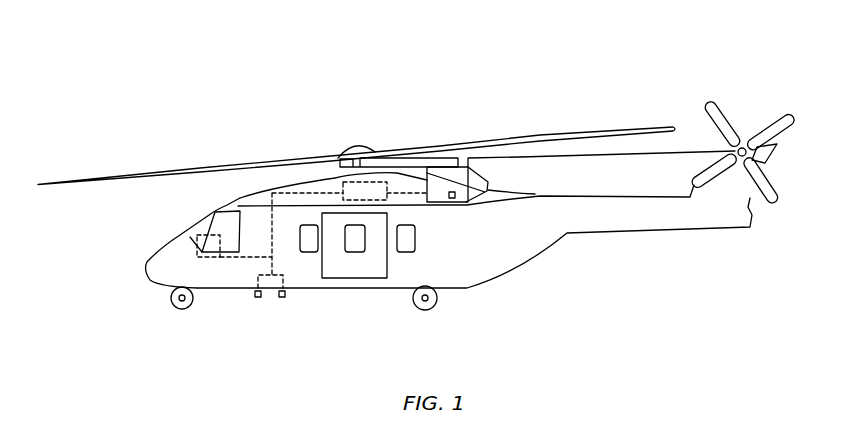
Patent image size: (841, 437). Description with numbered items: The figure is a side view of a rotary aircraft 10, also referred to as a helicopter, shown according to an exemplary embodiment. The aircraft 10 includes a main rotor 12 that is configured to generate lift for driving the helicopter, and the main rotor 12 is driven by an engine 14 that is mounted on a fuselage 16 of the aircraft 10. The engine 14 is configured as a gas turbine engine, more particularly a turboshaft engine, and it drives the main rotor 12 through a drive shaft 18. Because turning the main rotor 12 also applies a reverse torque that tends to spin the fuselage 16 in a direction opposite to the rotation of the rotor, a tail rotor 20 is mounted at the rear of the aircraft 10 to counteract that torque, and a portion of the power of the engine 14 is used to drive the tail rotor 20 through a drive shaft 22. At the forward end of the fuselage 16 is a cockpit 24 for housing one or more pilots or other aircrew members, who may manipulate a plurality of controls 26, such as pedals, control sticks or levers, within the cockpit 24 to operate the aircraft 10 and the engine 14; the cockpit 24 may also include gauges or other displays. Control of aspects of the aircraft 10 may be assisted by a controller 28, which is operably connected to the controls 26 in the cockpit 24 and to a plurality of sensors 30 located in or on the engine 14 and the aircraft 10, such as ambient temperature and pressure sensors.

The rotary aircraft 10 is at (172, 47).
The main rotor 12 is at (472, 142).
The engine 14 is at (433, 167).
The fuselage 16 is at (247, 280).
The drive shaft 18 is at (407, 157).
The tail rotor 20 is at (772, 128).
The drive shaft 22 is at (679, 152).
The cockpit 24 is at (220, 217).
The controls 26 is at (197, 250).
The controller 28 is at (345, 183).
The sensors 30 is at (260, 300).